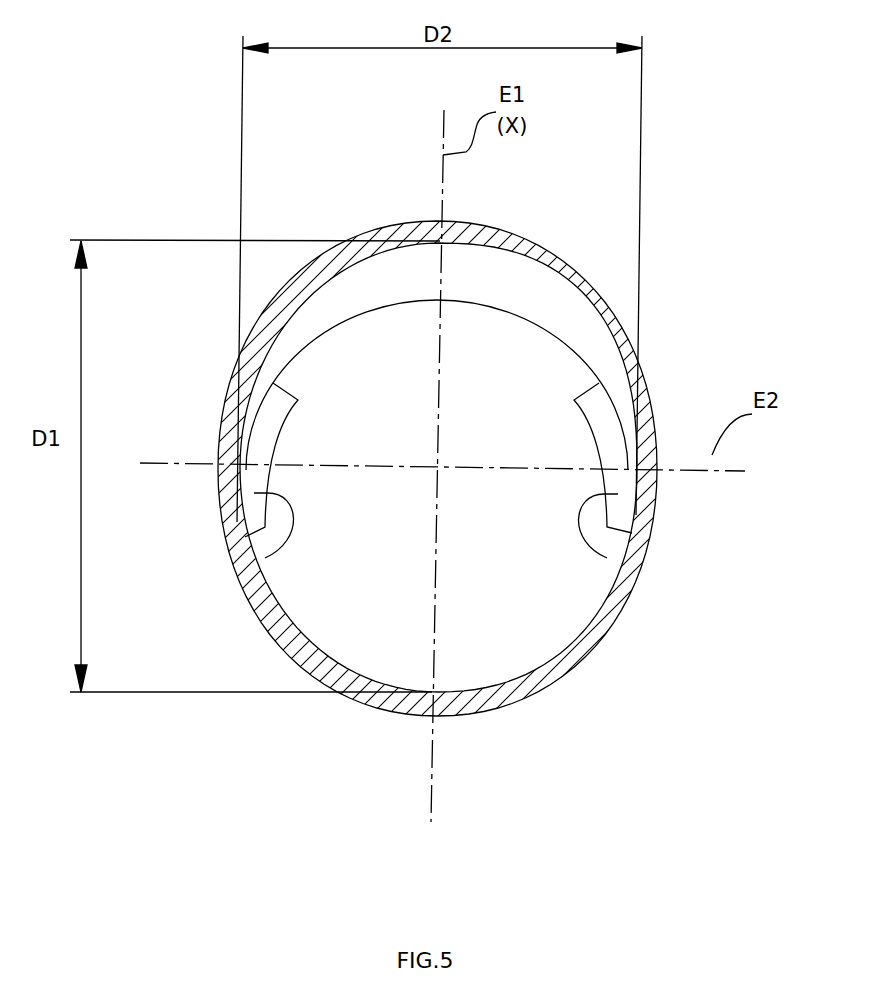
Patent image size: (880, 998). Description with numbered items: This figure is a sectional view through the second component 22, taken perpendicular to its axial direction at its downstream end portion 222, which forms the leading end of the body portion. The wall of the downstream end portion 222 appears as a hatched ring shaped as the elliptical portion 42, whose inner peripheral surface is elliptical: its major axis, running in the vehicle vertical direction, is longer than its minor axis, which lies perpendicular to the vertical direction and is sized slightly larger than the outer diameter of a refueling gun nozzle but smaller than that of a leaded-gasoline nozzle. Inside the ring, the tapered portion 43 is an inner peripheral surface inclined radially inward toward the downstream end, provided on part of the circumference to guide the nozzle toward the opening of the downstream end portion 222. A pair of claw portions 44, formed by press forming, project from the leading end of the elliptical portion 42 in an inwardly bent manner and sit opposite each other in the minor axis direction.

The second component 22 is at (489, 714).
The downstream end portion 222 is at (572, 652).
The elliptical portion 42 is at (405, 232).
The tapered portion 43 is at (547, 300).
The claw portions 44 is at (265, 558).